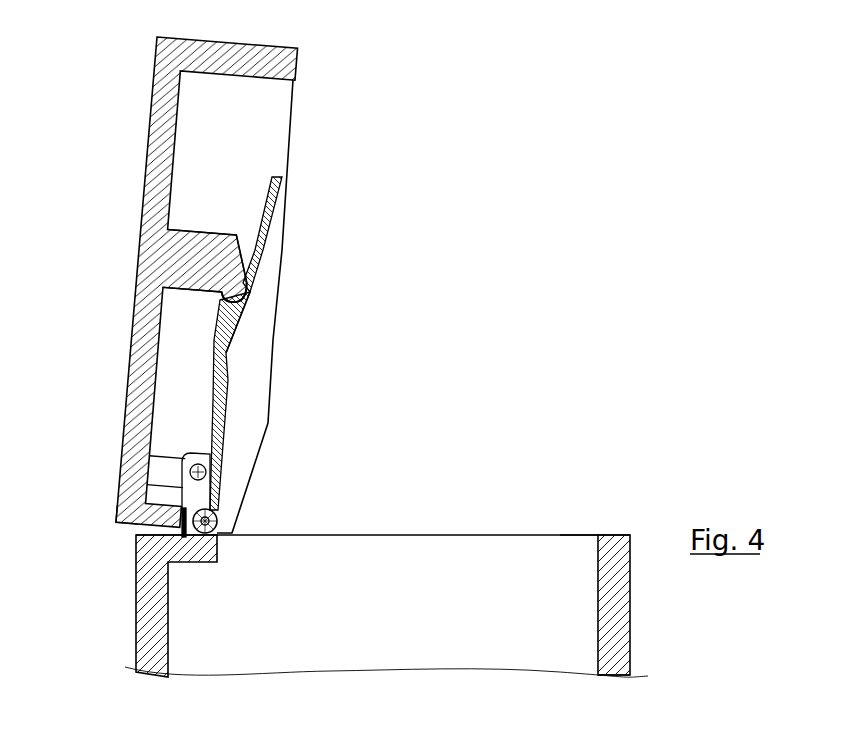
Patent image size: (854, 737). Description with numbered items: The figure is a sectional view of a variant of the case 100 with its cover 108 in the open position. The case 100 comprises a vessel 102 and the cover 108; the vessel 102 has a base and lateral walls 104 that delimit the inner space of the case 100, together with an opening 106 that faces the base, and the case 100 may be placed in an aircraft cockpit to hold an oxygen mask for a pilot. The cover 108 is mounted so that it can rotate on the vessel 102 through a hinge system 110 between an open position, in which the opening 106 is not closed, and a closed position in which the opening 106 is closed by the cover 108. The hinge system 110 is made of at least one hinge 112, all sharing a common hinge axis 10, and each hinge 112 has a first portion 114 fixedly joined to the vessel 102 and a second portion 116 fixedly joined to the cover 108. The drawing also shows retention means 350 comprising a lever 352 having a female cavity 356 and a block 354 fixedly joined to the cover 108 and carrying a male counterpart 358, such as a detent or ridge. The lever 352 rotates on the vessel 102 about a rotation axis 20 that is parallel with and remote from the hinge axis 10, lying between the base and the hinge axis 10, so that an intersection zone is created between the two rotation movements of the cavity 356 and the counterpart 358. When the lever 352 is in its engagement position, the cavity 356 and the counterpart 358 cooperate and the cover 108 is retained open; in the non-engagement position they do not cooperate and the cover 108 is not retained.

The case 100 is at (588, 185).
The vessel 102 is at (545, 685).
The lateral walls 104 is at (608, 663).
The opening 106 is at (573, 540).
The cover 108 is at (123, 122).
The hinge system 110 is at (413, 452).
The hinge 112 is at (387, 488).
The first portion 114 is at (116, 513).
The second portion 116 is at (183, 470).
The hinge axis 10 is at (207, 454).
The rotation axis 20 is at (218, 510).
The retention means 350 is at (393, 297).
The lever 352 is at (228, 378).
The block 354 is at (218, 247).
The cavity 356 is at (248, 318).
The counterpart 358 is at (245, 292).